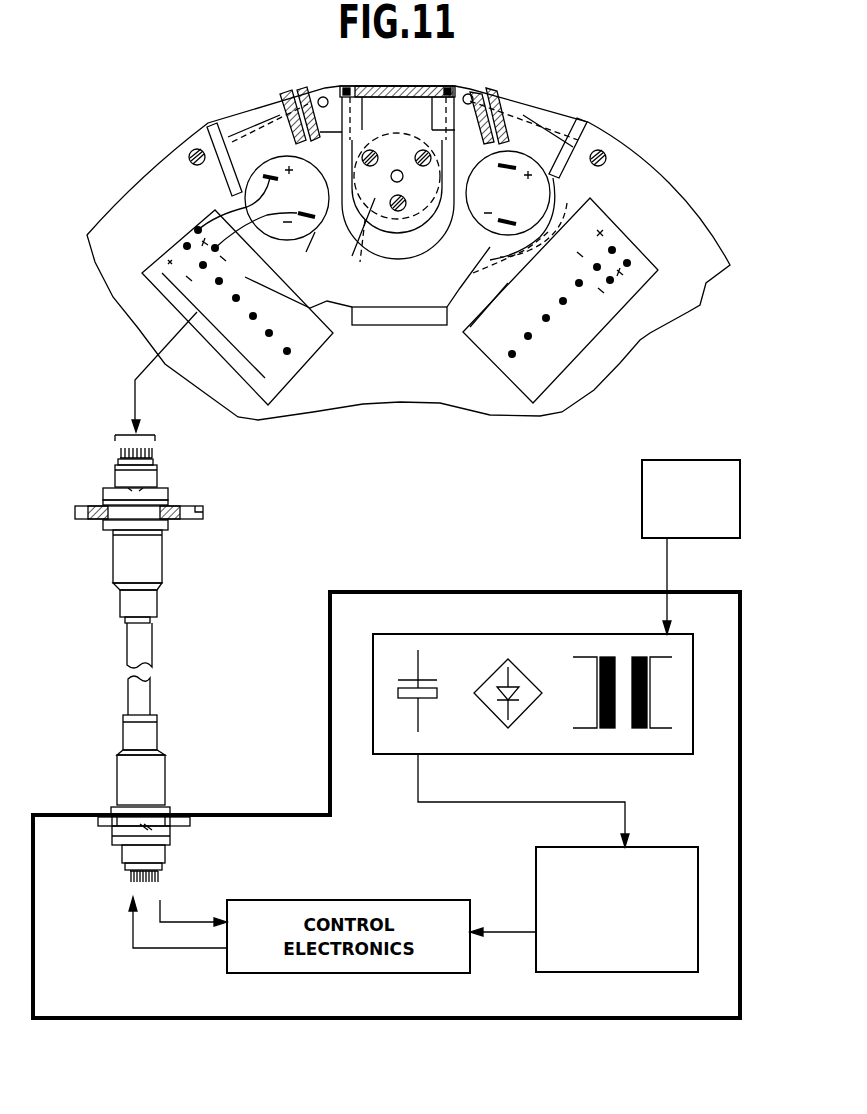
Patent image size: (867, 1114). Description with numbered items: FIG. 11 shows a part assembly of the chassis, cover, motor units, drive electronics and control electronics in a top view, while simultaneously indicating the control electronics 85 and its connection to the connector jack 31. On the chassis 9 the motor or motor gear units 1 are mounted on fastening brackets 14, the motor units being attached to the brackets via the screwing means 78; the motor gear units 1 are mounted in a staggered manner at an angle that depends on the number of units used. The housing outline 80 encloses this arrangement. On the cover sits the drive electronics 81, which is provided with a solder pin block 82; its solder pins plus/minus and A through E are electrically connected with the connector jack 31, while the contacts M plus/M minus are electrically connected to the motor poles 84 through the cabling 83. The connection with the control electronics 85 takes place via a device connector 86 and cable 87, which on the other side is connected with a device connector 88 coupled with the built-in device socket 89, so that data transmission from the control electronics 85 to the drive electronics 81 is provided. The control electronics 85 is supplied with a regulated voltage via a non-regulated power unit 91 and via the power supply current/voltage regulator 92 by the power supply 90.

The motor gear unit 1 is at (334, 236).
The chassis 9 is at (473, 90).
The fastening bracket 14 is at (390, 86).
The connector jack 31 is at (152, 482).
The screwing means 78 is at (372, 155).
The housing 80 is at (660, 202).
The drive electronics 81 is at (593, 225).
The solder pin block 82 is at (612, 250).
The cabling 83 is at (207, 212).
The motor poles 84 is at (275, 176).
The control electronics 85 is at (378, 600).
The device connector 86 is at (155, 555).
The cable 87 is at (147, 650).
The device connector 88 is at (153, 778).
The built-in device socket 89 is at (172, 815).
The power supply 90 is at (690, 460).
The non-regulated power unit 91 is at (652, 752).
The power supply current/voltage regulator 92 is at (536, 862).